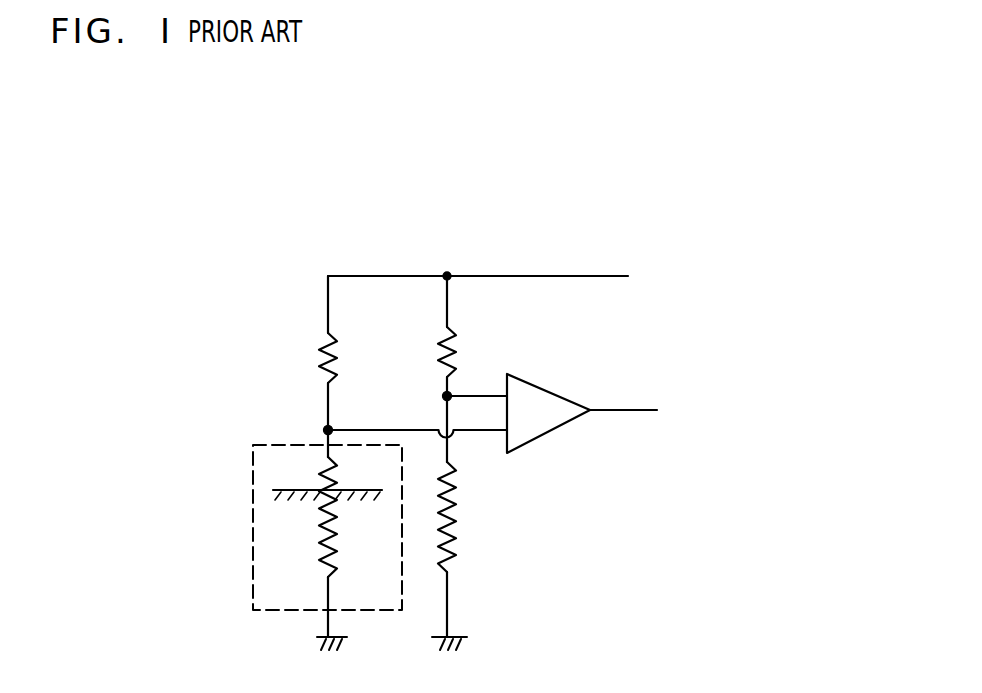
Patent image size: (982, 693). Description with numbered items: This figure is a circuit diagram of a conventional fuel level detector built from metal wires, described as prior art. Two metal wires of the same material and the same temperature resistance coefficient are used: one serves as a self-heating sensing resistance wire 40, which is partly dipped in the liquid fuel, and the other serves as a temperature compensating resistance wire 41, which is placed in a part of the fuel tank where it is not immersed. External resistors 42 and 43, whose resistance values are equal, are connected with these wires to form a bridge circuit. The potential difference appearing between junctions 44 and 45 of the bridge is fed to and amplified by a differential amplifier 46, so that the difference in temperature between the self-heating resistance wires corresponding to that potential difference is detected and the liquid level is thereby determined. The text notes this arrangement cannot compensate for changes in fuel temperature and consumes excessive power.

The self-heating sensing resistance wire 40 is at (320, 556).
The temperature compensating resistance wire 41 is at (453, 547).
The external resistor 42 is at (319, 355).
The external resistor 43 is at (455, 345).
The junction 44 is at (326, 429).
The junction 45 is at (450, 393).
The differential amplifier 46 is at (540, 395).